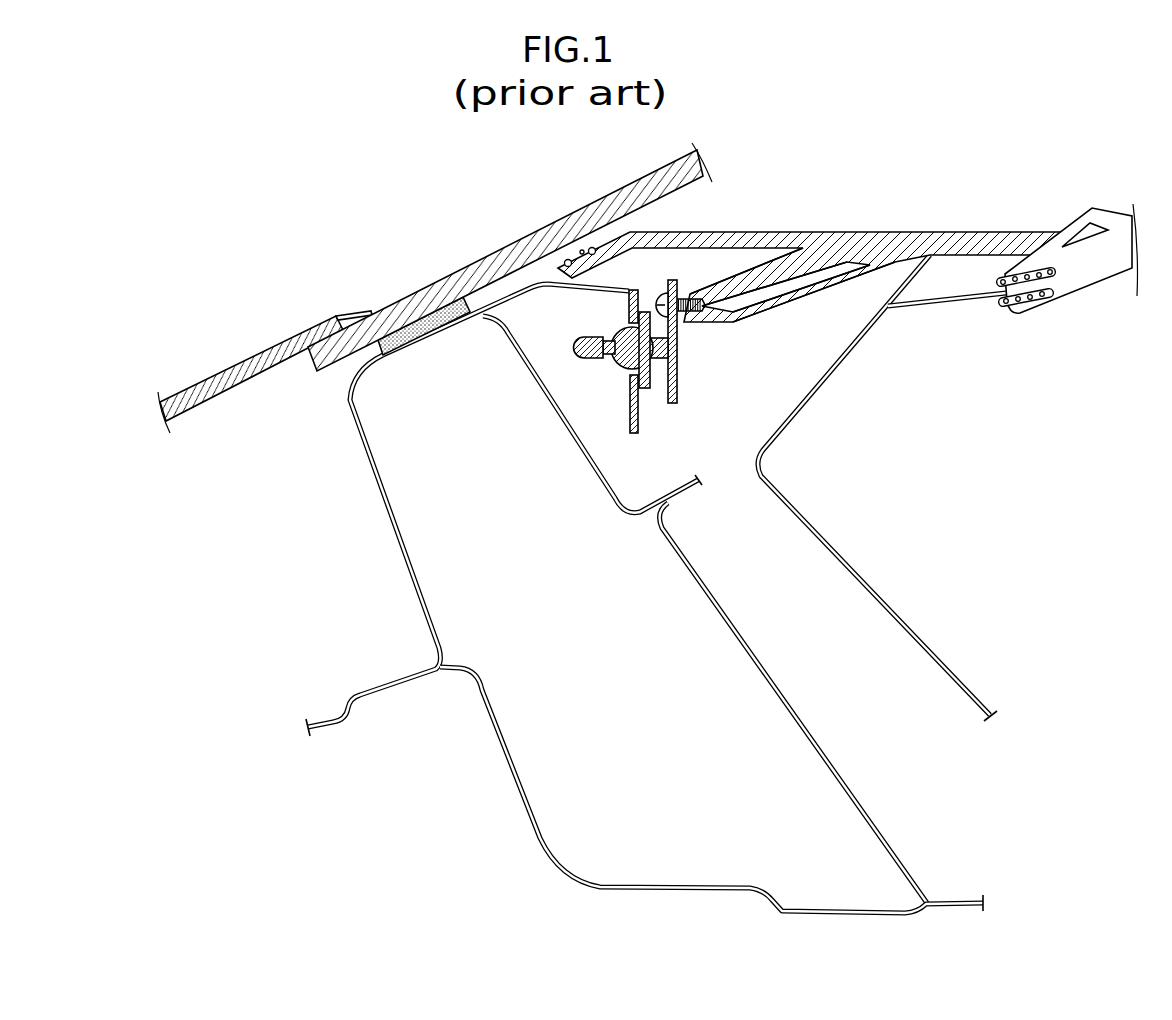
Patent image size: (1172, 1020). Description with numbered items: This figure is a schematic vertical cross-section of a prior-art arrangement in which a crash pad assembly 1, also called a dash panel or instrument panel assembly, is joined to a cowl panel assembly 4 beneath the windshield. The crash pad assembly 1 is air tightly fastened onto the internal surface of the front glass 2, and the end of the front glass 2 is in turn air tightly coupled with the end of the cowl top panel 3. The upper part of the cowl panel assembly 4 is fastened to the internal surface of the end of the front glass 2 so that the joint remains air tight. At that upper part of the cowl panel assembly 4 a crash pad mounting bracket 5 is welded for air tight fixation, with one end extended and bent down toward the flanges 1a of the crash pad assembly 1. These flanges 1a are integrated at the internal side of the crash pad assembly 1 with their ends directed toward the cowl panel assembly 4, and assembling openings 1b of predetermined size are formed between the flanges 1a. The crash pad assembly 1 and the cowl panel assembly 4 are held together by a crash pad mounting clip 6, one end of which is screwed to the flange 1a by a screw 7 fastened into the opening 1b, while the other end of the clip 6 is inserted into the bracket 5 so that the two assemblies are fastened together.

The crash pad assembly 1 is at (860, 237).
The flanges 1a is at (737, 277).
The assembling openings 1b is at (752, 291).
The front glass 2 is at (543, 232).
The cowl top panel 3 is at (200, 388).
The cowl panel assembly 4 is at (382, 496).
The crash pad mounting brackets 5 is at (512, 297).
The crash pad mounting clip 6 is at (676, 385).
The screw 7 is at (658, 297).